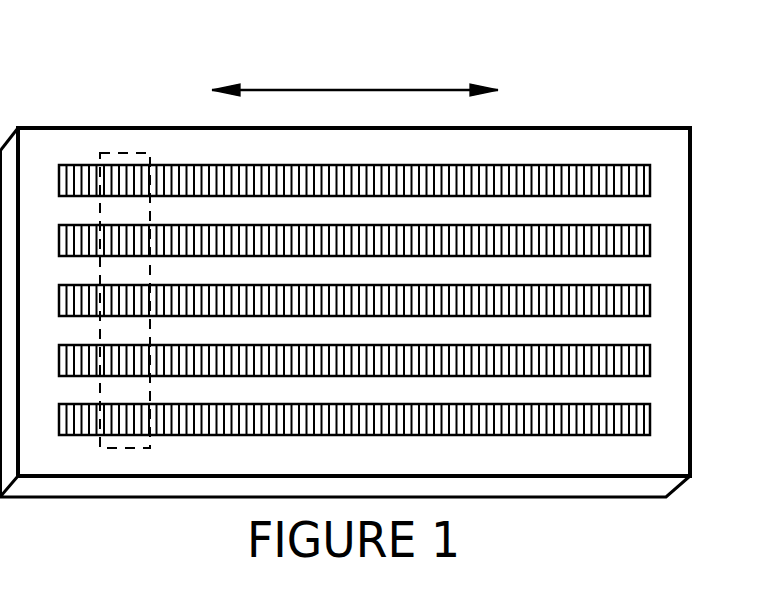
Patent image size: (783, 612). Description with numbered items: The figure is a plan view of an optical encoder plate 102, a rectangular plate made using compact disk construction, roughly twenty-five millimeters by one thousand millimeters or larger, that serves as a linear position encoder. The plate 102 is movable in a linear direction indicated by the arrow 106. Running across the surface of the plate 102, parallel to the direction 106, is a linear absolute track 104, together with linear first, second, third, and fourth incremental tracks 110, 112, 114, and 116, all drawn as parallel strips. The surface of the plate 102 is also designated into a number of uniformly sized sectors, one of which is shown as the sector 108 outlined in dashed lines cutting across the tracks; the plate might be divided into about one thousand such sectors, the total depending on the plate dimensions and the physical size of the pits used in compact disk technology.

The encoder plate 102 is at (592, 128).
The linear absolute track 104 is at (366, 476).
The direction of movement 106 is at (354, 88).
The sector 108 is at (120, 152).
The first incremental track 110 is at (404, 344).
The second incremental track 112 is at (401, 284).
The third incremental track 114 is at (401, 224).
The fourth incremental track 116 is at (401, 161).